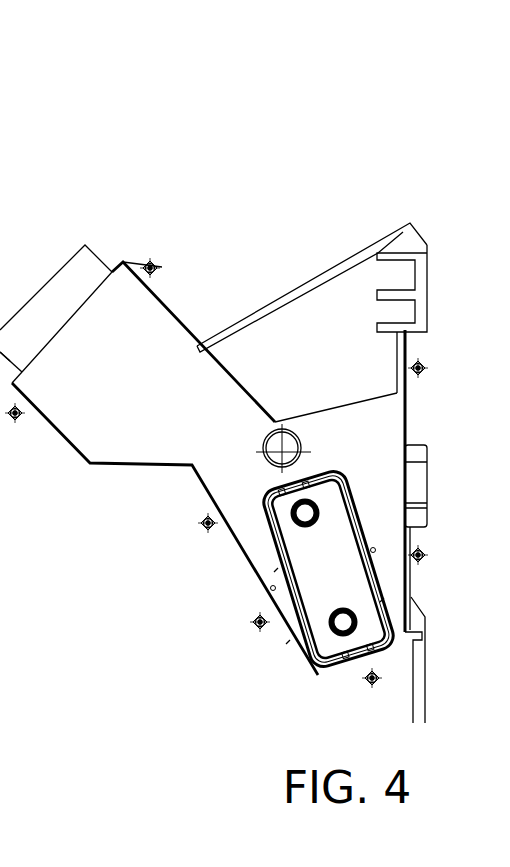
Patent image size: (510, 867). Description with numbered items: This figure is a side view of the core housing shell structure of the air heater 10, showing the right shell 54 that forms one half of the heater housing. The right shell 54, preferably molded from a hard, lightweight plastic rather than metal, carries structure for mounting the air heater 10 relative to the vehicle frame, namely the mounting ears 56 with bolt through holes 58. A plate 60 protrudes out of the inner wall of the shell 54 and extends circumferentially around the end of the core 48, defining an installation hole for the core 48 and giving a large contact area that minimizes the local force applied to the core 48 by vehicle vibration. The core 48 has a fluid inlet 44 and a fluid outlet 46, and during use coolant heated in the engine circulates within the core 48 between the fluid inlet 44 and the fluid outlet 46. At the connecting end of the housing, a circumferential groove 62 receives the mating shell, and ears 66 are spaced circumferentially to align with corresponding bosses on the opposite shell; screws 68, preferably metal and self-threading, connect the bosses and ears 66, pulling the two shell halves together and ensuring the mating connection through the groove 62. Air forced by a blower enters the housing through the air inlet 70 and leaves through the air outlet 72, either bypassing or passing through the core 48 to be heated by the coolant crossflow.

The air heater 10 is at (200, 100).
The fluid inlet 44 is at (293, 510).
The fluid outlet 46 is at (330, 627).
The core 48 is at (327, 542).
The right shell 54 is at (142, 425).
The mounting ears 56 is at (422, 278).
The bolt through holes 58 is at (5, 308).
The plate 60 is at (383, 600).
The circumferential groove 62 is at (173, 313).
The ears 66 is at (430, 368).
The screws 68 is at (155, 265).
The air inlet 70 is at (328, 268).
The air outlet 72 is at (70, 262).